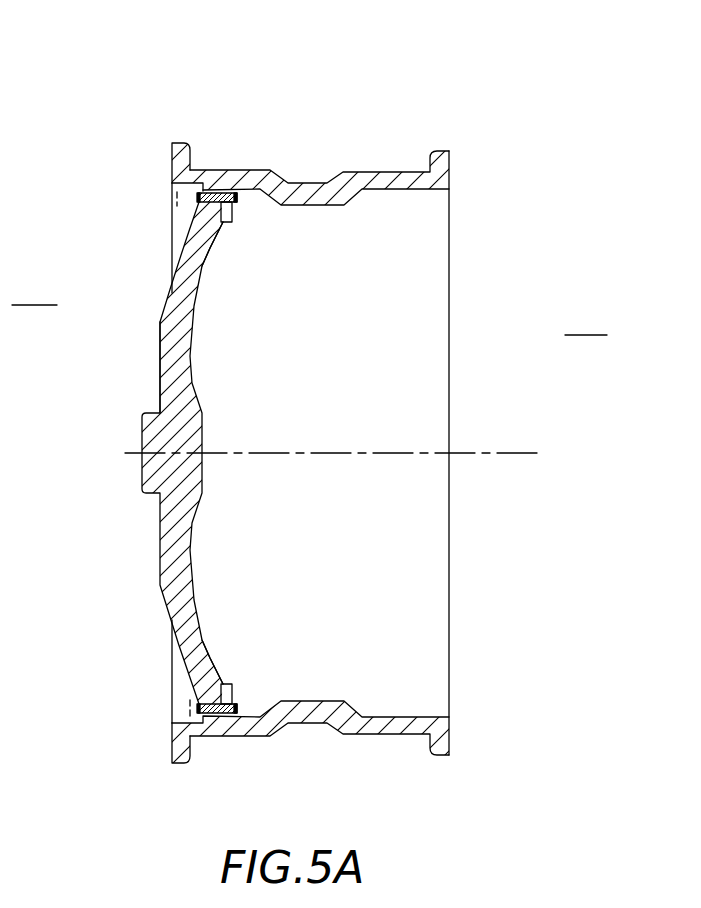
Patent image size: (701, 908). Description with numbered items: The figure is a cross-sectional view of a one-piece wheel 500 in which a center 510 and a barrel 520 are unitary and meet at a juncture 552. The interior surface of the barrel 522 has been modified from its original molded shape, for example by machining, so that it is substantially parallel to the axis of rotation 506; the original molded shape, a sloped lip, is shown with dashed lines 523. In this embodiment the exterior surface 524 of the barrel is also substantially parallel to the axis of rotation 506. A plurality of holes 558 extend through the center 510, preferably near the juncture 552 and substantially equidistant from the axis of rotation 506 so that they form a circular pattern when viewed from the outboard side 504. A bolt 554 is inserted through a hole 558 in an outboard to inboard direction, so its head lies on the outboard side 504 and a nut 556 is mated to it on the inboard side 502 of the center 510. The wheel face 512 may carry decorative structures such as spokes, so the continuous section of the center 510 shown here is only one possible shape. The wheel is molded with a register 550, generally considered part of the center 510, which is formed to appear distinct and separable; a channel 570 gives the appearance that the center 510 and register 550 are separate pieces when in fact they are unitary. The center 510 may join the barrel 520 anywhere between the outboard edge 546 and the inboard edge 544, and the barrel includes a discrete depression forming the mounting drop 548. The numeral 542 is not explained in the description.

The one-piece wheel 500 is at (188, 80).
The inboard side 502 is at (586, 324).
The outboard side 504 is at (35, 292).
The axis of rotation 506 is at (512, 453).
The center 510 is at (158, 535).
The wheel face 512 is at (145, 385).
The barrel 520 is at (249, 119).
The interior surface of the barrel 522 is at (186, 205).
The dashed lines 523 is at (178, 192).
The exterior surface of the barrel 524 is at (196, 135).
The inboard rim flange 542 is at (175, 709).
The inboard edge 544 is at (450, 638).
The outboard edge 546 is at (172, 630).
The mounting drop 548 is at (315, 737).
The register 550 is at (232, 693).
The juncture 552 is at (220, 170).
The bolt 554 is at (182, 202).
The nut 556 is at (232, 204).
The holes 558 is at (219, 210).
The channel 570 is at (229, 680).